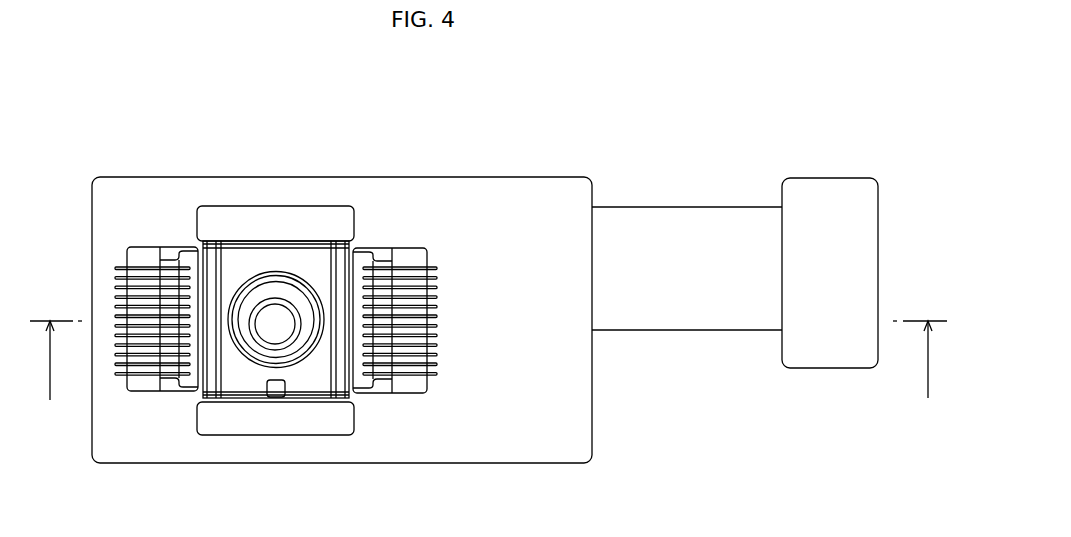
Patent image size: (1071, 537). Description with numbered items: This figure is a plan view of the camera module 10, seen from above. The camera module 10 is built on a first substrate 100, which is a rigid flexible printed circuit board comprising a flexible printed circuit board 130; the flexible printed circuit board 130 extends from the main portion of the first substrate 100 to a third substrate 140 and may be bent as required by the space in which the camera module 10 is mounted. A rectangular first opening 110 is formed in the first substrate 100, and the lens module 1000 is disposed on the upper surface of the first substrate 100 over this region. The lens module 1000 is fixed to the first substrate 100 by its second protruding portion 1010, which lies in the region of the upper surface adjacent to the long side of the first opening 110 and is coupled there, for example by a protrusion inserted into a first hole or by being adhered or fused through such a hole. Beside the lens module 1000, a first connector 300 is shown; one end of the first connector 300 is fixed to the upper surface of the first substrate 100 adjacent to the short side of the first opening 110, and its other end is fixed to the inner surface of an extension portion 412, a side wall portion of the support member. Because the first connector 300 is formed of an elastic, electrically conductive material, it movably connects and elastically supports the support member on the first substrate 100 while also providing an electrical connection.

The camera module 10 is at (813, 90).
The first substrate 100 is at (536, 190).
The first opening 110 is at (412, 260).
The flexible printed circuit board (FPCB) 130 is at (712, 215).
The third substrate 140 is at (832, 356).
The first connector 300 is at (428, 375).
The extension portion 412 is at (193, 372).
The lens module 1000 is at (248, 262).
The second protruding portion 1010 is at (300, 418).